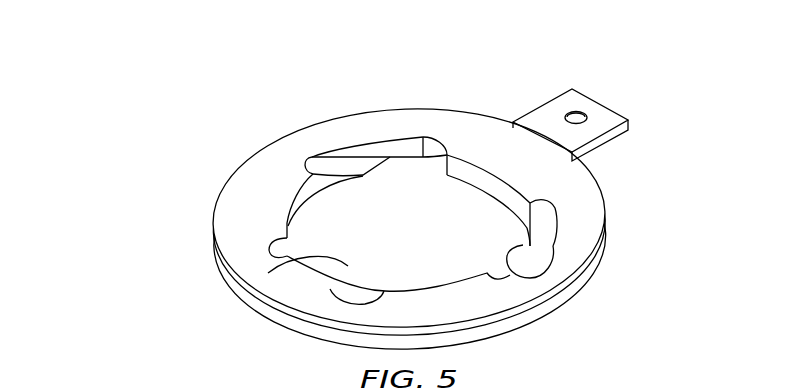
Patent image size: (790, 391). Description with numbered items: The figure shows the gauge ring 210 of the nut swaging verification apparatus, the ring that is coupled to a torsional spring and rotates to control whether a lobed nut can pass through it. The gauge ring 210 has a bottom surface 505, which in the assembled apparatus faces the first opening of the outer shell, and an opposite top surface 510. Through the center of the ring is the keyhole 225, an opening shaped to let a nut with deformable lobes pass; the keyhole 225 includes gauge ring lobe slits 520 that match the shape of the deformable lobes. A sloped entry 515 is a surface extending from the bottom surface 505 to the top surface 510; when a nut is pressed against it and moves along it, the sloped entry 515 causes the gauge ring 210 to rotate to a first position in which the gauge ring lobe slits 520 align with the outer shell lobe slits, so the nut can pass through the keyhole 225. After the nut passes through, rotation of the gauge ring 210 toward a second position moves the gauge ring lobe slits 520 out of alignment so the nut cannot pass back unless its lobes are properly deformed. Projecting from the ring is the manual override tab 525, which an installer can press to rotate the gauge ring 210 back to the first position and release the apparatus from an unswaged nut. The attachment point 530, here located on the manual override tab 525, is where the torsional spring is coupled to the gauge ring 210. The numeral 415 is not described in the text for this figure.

The gauge ring 210 is at (340, 238).
The keyhole 225 is at (403, 177).
The Component 415 is at (194, 5).
The bottom surface 505 is at (178, 239).
The top surface 510 is at (542, 316).
The sloped entry 515 is at (357, 158).
The gauge ring lobe slits 520 is at (612, 271).
The manual override tab 525 is at (610, 80).
The attachment point 530 is at (553, 67).